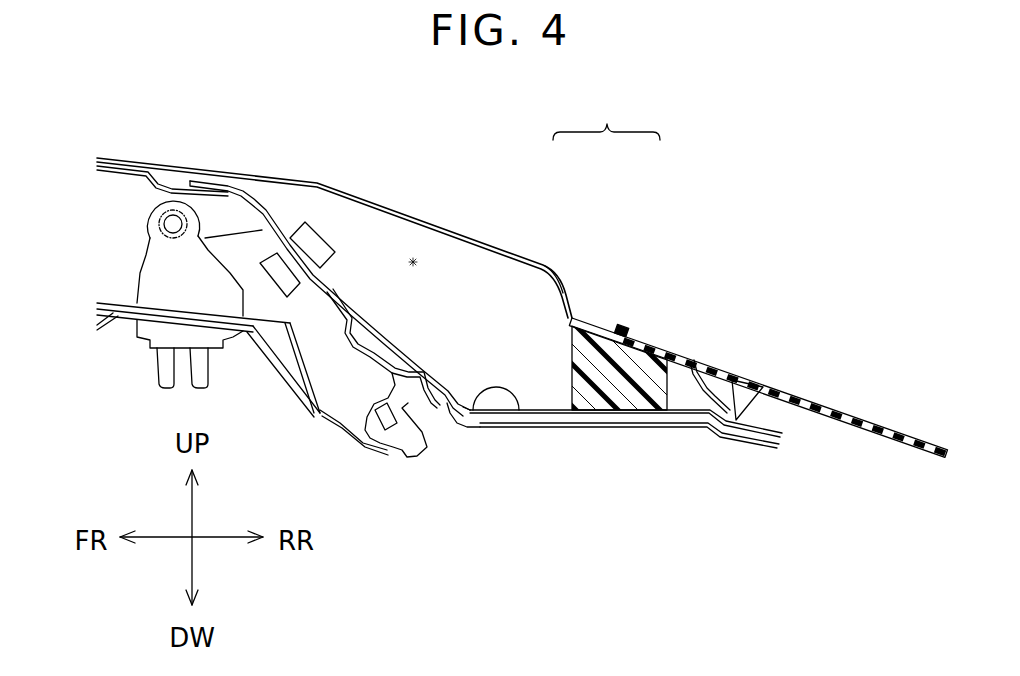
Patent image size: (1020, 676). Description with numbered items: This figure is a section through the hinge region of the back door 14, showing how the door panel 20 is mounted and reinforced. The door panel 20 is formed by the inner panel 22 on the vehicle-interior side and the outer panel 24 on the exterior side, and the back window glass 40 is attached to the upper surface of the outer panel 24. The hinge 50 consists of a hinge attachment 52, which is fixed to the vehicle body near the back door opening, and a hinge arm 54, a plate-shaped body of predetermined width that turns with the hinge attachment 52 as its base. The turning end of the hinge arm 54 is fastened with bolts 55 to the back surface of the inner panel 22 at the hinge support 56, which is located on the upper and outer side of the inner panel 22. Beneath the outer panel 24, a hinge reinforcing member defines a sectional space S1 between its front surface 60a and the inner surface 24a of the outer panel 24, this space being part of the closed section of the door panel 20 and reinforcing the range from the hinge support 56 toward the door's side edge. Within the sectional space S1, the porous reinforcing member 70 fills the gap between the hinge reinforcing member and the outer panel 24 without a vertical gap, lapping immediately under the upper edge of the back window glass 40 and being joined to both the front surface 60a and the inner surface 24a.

The back door 14 is at (761, 228).
The door panel 20 is at (606, 114).
The inner panel 22 is at (521, 426).
The outer panel 24 is at (513, 257).
The inner surface of the outer panel 24a is at (537, 267).
The back window glass 40 is at (893, 425).
The hinge 50 is at (208, 212).
The hinge attachment 52 is at (152, 268).
The hinge arm 54 is at (225, 200).
The bolts 55 is at (255, 322).
The hinge support 56 is at (312, 293).
The front surface of the hinge reinforcing member 60a is at (470, 427).
The porous reinforcing member 70 is at (627, 362).
The sectional space S1 is at (413, 258).